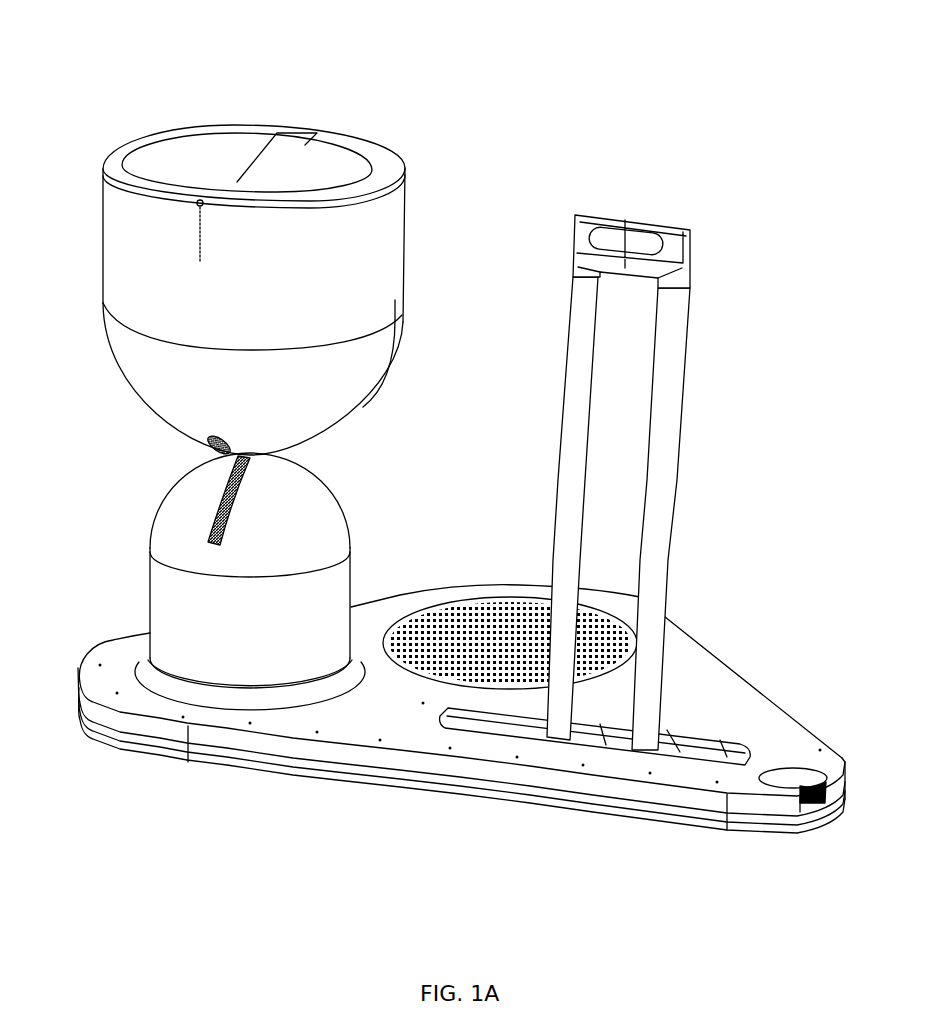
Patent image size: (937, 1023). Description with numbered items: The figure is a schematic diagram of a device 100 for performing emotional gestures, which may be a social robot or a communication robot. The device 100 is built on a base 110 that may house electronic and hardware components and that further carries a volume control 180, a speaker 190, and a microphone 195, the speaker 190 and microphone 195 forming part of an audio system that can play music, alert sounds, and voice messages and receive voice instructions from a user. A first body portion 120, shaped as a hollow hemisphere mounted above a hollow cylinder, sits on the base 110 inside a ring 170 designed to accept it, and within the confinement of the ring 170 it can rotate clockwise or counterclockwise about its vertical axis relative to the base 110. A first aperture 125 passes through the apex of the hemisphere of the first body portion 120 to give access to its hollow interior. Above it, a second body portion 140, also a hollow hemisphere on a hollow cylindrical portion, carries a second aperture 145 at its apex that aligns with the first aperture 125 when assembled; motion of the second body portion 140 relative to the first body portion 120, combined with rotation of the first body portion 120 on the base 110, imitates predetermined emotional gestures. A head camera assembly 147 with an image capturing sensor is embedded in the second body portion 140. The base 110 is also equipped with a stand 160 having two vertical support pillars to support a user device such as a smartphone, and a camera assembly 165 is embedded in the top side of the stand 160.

The device 100 is at (752, 100).
The base 110 is at (750, 703).
The first body portion 120 is at (167, 530).
The first aperture 125 is at (226, 470).
The second body portion 140 is at (370, 247).
The second aperture 145 is at (202, 444).
The head camera assembly 147 is at (198, 191).
The stand 160 is at (670, 461).
The camera assembly 165 is at (670, 245).
The ring 170 is at (145, 668).
The volume control 180 is at (805, 780).
The speaker 190 is at (493, 603).
The microphone 195 is at (422, 702).